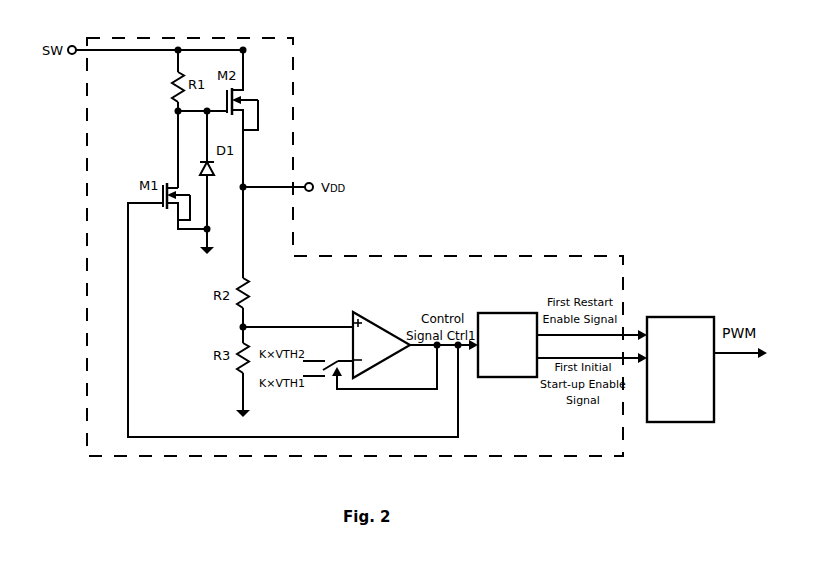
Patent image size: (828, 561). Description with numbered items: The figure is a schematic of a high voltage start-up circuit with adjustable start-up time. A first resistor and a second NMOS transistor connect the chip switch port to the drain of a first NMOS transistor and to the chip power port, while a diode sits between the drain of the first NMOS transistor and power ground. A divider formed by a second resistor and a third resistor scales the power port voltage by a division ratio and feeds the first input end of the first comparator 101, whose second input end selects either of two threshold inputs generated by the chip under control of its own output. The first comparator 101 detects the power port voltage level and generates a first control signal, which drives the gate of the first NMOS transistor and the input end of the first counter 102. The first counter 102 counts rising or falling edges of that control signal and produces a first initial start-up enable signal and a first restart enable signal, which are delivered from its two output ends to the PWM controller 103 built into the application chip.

The first comparator 101 is at (373, 316).
The first counter 102 is at (503, 313).
The PWM controller 103 is at (672, 317).